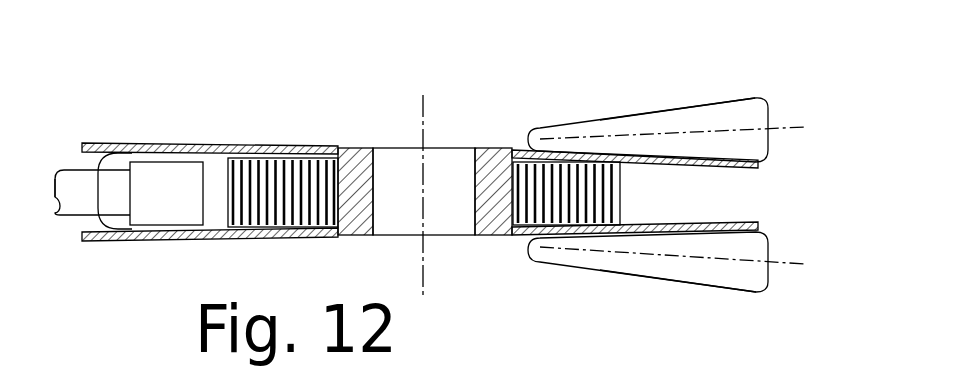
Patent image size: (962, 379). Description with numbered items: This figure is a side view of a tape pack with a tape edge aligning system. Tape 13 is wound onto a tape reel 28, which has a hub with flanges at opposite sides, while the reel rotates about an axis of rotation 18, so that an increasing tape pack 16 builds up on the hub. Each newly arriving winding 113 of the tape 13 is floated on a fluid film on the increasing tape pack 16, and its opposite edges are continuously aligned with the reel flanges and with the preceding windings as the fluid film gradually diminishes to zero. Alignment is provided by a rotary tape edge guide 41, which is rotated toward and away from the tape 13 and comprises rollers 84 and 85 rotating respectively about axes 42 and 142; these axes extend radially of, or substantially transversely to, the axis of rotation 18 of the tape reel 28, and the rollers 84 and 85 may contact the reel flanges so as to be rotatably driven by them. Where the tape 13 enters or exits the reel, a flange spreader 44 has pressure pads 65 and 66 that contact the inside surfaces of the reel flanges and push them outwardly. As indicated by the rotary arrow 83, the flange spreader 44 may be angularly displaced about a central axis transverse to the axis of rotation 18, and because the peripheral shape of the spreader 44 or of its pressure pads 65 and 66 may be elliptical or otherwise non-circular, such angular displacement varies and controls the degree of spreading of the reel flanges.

The tape 13 is at (197, 195).
The tape pack 16 is at (496, 138).
The axis of rotation 18 is at (422, 117).
The tape reel 28 is at (211, 130).
The tape edge guide 41 is at (603, 98).
The axis of rotation 42 is at (787, 126).
The flange spreader 44 is at (49, 239).
The pressure pad 65 is at (97, 162).
The pressure pad 66 is at (97, 220).
The rotary arrow 83 is at (34, 193).
The roller 84 is at (708, 100).
The roller 85 is at (665, 282).
The tape winding 113 is at (620, 193).
The axis 142 is at (788, 264).